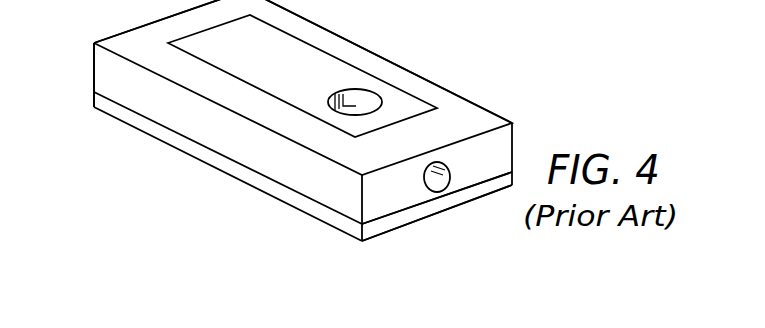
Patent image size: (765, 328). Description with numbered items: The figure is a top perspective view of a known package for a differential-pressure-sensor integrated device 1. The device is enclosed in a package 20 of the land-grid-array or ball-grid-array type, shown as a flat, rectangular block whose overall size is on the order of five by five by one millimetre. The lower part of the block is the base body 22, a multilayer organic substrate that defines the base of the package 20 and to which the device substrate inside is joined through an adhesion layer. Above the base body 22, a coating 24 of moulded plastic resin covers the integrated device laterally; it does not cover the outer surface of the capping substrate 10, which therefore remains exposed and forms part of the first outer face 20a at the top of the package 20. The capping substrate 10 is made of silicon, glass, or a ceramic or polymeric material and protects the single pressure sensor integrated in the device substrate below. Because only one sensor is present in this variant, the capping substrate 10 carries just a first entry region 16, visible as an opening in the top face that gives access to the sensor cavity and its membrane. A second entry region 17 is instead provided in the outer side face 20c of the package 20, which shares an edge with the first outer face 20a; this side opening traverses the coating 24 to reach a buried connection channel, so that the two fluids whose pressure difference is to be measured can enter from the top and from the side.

The integrated device 1 is at (484, 52).
The capping substrate 10 is at (307, 55).
The first entry region 16 is at (360, 101).
The second entry region 17 is at (437, 183).
The package 20 is at (174, 159).
The first outer face 20a is at (477, 117).
The outer side face 20c is at (382, 211).
The base body 22 is at (495, 189).
The coating 24 is at (118, 40).